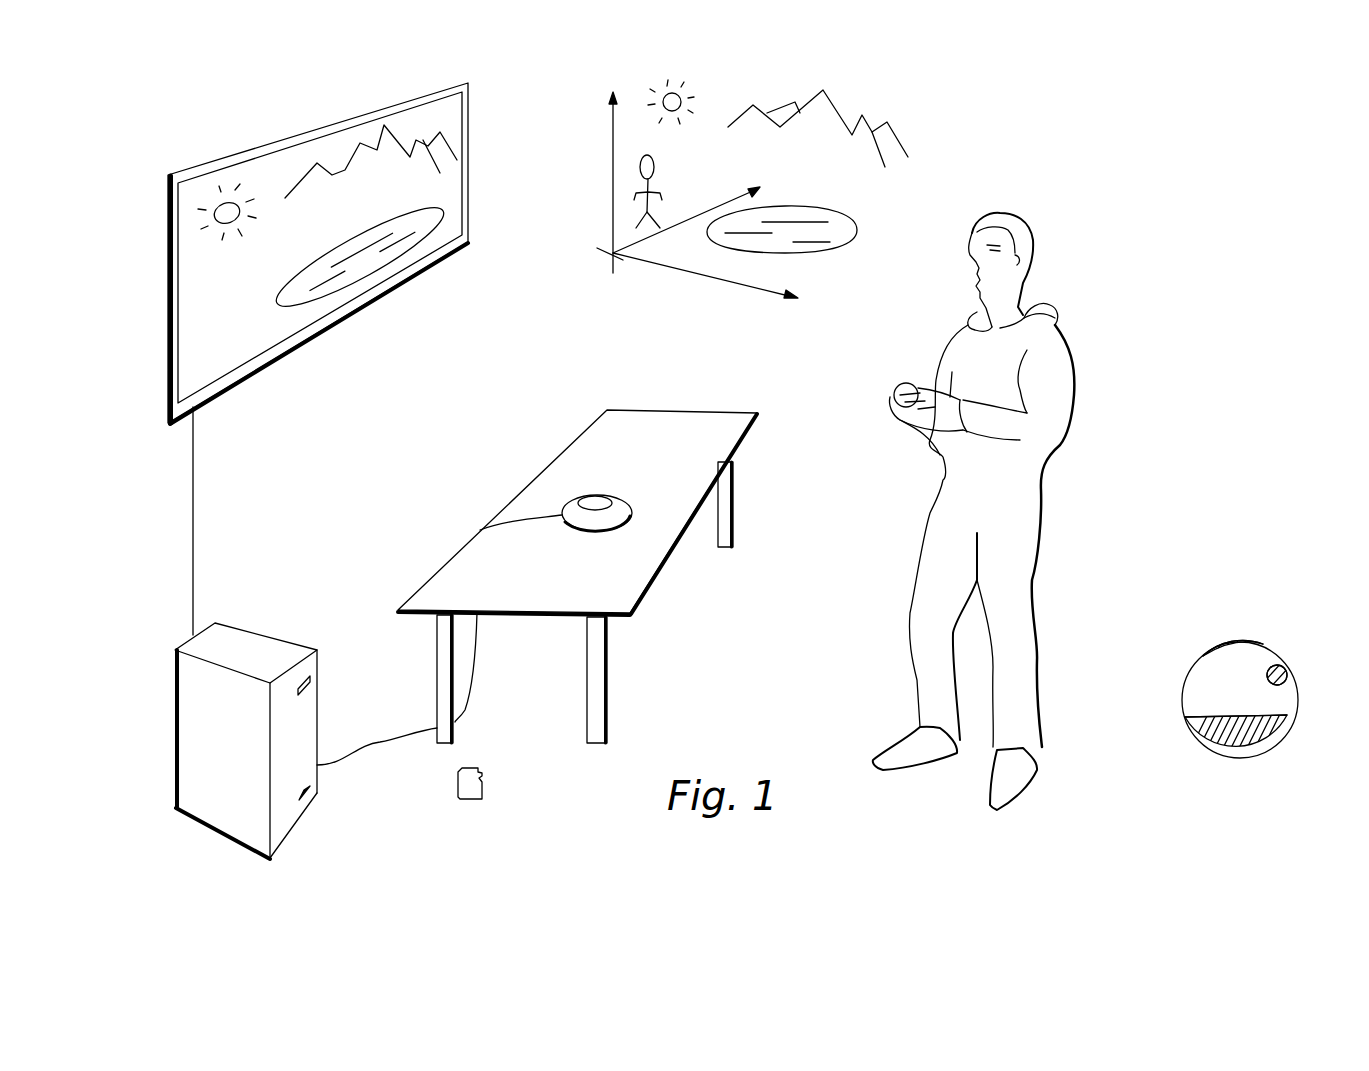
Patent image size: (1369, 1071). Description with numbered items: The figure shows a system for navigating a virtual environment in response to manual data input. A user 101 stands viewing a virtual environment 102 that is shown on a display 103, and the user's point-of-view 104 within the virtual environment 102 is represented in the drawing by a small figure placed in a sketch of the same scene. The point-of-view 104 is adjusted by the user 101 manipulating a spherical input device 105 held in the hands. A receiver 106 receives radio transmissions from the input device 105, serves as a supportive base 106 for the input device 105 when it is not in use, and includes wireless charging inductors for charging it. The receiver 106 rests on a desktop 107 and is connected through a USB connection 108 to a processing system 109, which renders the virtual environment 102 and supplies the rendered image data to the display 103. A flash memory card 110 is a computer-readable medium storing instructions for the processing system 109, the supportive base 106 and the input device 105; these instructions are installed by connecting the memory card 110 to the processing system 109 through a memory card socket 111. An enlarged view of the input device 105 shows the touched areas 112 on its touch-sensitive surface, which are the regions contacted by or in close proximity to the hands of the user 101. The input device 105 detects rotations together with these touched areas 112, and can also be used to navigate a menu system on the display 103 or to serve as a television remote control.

The user 101 is at (1058, 363).
The virtual environment 102 is at (370, 150).
The display 103 is at (468, 180).
The point-of-view 104 is at (654, 166).
The spherical input device 105 is at (890, 397).
The receiver 106 is at (617, 510).
The desktop 107 is at (635, 580).
The USB connection 108 is at (487, 518).
The processing system 109 is at (303, 713).
The flash memory card 110 is at (472, 787).
The memory card socket 111 is at (317, 797).
The touched areas 112 is at (1223, 642).